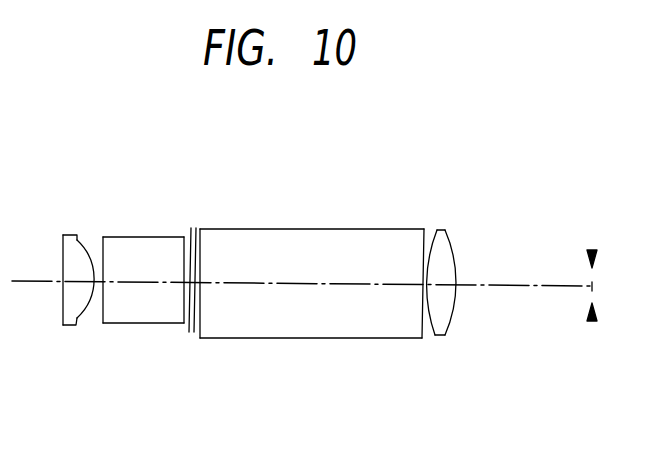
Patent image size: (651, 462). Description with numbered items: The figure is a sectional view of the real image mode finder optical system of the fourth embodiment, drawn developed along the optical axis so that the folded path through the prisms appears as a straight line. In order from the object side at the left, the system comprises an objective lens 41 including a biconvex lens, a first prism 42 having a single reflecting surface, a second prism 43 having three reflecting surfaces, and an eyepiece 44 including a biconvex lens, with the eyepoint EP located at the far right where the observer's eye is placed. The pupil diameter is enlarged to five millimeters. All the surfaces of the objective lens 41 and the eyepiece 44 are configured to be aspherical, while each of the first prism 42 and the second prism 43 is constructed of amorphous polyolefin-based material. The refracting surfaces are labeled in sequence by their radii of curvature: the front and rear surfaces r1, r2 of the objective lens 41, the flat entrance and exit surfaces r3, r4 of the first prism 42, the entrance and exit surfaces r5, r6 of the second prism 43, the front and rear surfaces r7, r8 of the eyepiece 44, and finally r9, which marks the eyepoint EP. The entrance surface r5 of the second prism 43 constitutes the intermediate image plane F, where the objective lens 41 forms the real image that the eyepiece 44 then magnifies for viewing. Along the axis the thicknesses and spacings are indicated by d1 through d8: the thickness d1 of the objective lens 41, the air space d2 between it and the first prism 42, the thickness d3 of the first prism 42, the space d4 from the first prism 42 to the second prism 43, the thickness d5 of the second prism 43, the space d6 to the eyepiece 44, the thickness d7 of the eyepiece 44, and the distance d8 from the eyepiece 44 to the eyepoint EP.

The objective lens 41 is at (66, 231).
The first prism 42 is at (155, 230).
The second prism 43 is at (312, 240).
The eyepiece 44 is at (454, 238).
The radius of curvature of first surface r1 is at (62, 258).
The radius of curvature of second surface r2 is at (87, 243).
The radius of curvature of third surface r3 is at (113, 237).
The radius of curvature of fourth surface r4 is at (174, 242).
The radius of curvature of fifth surface r5 is at (200, 248).
The radius of curvature of sixth surface r6 is at (423, 248).
The radius of curvature of seventh surface r7 is at (436, 240).
The radius of curvature of eighth surface r8 is at (455, 262).
The eyepoint surface r9 is at (592, 250).
The thickness of objective lens d1 is at (82, 283).
The space between objective lens and first prism d2 is at (98, 284).
The thickness of first prism d3 is at (145, 284).
The space between first prism and second prism d4 is at (187, 284).
The thickness of second prism d5 is at (314, 285).
The space between second prism and eyepiece d6 is at (428, 285).
The thickness of eyepiece d7 is at (443, 285).
The space between eyepiece and eyepoint d8 is at (523, 286).
The intermediate image plane F is at (200, 336).
The eyepoint EP is at (592, 321).